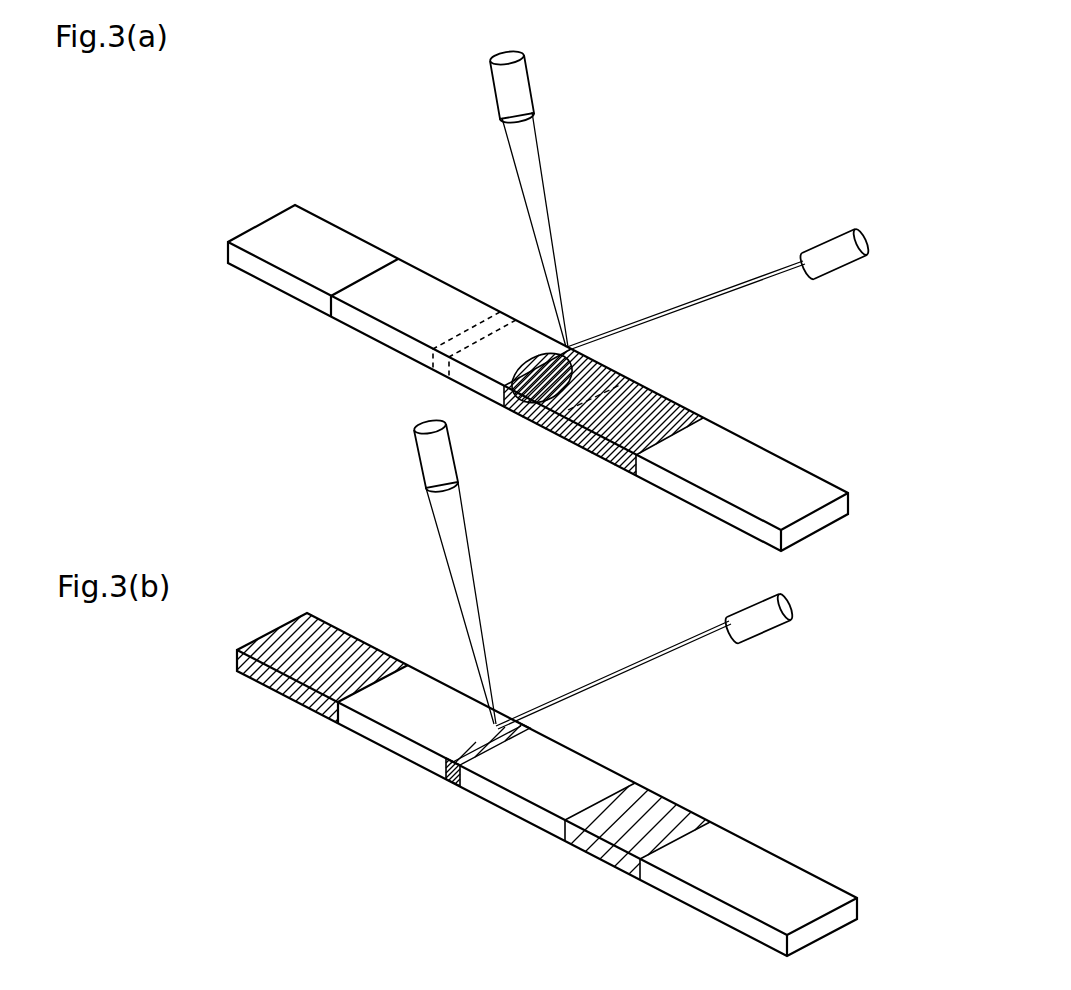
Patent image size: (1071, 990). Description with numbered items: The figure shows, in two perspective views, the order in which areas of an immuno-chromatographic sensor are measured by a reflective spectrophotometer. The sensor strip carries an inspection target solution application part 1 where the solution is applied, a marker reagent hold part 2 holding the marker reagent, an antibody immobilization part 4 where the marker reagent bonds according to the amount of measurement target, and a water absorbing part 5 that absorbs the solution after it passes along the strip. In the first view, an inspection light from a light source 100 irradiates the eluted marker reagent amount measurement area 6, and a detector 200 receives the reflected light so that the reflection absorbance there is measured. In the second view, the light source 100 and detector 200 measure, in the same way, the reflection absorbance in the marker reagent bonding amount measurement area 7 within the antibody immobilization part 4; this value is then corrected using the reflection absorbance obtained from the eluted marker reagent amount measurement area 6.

In FIG. 3A, the inspection target solution application part 1 is at (750, 453).
In FIG. 3B, the inspection target solution application part 1 is at (758, 860).
In FIG. 3A, the marker reagent hold part 2 is at (662, 410).
In FIG. 3B, the marker reagent hold part 2 is at (677, 815).
In FIG. 3A, the antibody immobilization part 4 is at (513, 320).
In FIG. 3B, the antibody immobilization part 4 is at (448, 783).
In FIG. 3A, the water absorbing part 5 is at (333, 238).
In FIG. 3B, the water absorbing part 5 is at (345, 643).
In FIG. 3A, the eluted marker reagent amount measurement area 6 is at (557, 420).
In FIG. 3B, the marker reagent bonding amount measurement area 7 is at (480, 735).
In FIG. 3A, the light source 100 is at (528, 80).
In FIG. 3B, the light source 100 is at (420, 470).
In FIG. 3A, the detector 200 is at (827, 233).
In FIG. 3B, the detector 200 is at (767, 635).